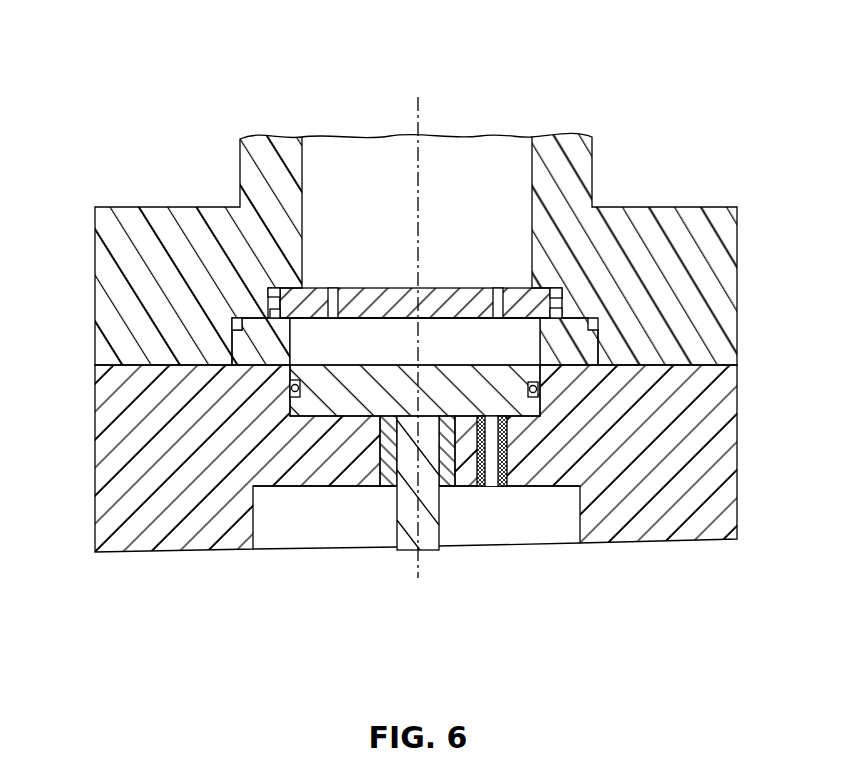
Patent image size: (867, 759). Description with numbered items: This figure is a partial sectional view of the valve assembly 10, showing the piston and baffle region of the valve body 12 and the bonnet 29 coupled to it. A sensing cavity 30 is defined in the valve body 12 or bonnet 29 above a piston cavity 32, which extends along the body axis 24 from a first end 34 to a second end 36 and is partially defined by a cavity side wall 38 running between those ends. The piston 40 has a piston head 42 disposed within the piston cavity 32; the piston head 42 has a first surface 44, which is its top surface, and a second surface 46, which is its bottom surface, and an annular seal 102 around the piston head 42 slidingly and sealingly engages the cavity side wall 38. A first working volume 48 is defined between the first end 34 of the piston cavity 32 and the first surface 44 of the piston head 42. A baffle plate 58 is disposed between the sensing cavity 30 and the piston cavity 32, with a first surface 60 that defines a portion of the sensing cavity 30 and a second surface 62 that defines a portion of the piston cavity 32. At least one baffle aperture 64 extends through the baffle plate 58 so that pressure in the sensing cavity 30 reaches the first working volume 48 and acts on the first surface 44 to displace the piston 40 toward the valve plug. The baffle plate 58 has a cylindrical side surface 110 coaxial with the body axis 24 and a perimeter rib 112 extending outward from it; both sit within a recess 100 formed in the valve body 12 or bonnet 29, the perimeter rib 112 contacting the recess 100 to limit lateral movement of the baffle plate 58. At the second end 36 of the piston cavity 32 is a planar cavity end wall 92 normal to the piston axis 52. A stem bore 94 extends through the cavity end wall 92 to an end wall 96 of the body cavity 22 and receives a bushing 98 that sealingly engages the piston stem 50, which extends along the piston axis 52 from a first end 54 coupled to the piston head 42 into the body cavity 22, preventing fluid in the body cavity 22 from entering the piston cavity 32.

The valve assembly 10 is at (608, 78).
The valve body 12 is at (717, 508).
The body cavity 22 is at (536, 520).
The body axis 24 is at (421, 106).
The bonnet 29 is at (250, 165).
The sensing cavity 30 is at (339, 182).
The piston cavity 32 is at (540, 327).
The first end 34 is at (233, 337).
The second end 36 is at (285, 397).
The cavity side wall 38 is at (285, 343).
The piston 40 is at (530, 372).
The piston head 42 is at (527, 406).
The first surface 44 is at (314, 365).
The second surface 46 is at (503, 423).
The first working volume 48 is at (448, 354).
The piston stem 50 is at (448, 490).
The piston axis 52 is at (427, 523).
The first end 54 is at (403, 420).
The baffle plate 58 is at (441, 287).
The first surface 60 is at (377, 287).
The second surface 62 is at (390, 320).
The baffle aperture 64 is at (333, 287).
The cavity end wall 92 is at (318, 410).
The stem bore 94 is at (380, 455).
The end wall 96 is at (320, 487).
The bushing 98 is at (462, 480).
The recess 100 is at (562, 300).
The annular seal 102 is at (285, 389).
The side surface 110 is at (268, 290).
The perimeter rib 112 is at (268, 302).